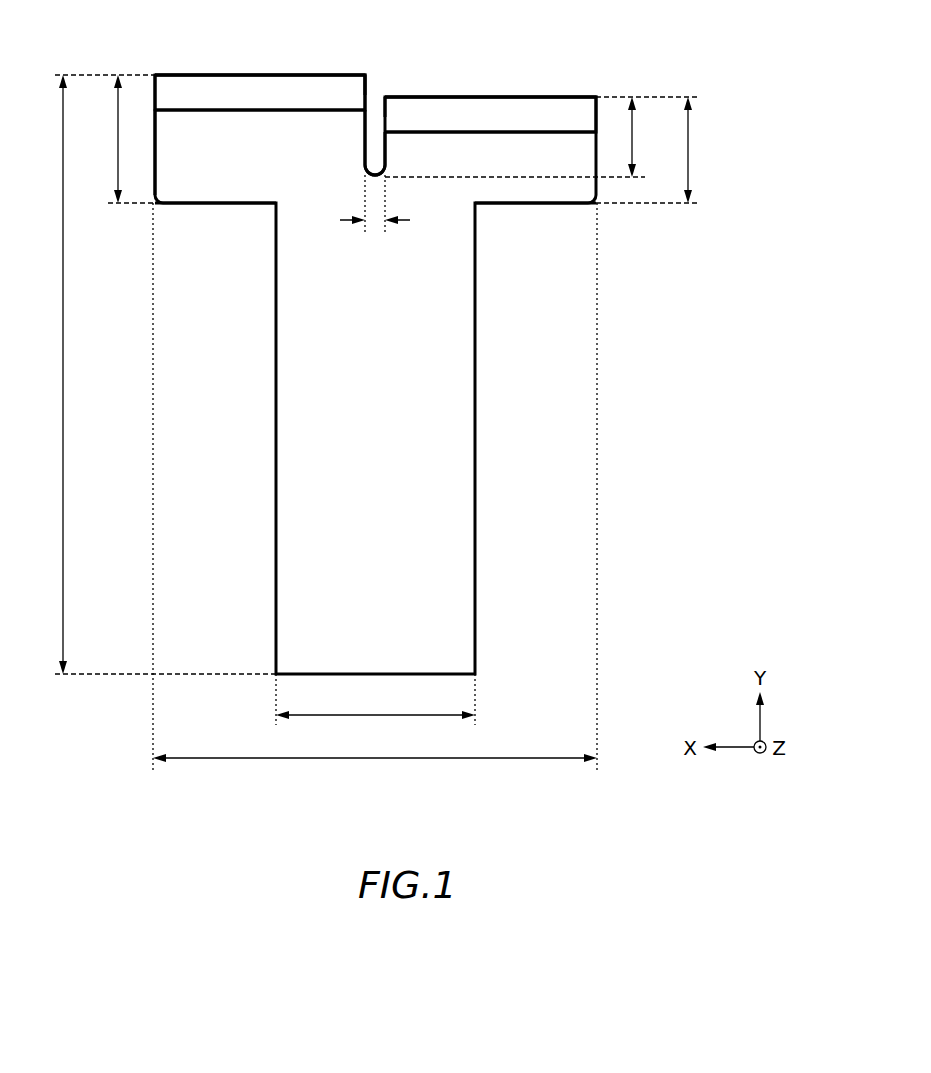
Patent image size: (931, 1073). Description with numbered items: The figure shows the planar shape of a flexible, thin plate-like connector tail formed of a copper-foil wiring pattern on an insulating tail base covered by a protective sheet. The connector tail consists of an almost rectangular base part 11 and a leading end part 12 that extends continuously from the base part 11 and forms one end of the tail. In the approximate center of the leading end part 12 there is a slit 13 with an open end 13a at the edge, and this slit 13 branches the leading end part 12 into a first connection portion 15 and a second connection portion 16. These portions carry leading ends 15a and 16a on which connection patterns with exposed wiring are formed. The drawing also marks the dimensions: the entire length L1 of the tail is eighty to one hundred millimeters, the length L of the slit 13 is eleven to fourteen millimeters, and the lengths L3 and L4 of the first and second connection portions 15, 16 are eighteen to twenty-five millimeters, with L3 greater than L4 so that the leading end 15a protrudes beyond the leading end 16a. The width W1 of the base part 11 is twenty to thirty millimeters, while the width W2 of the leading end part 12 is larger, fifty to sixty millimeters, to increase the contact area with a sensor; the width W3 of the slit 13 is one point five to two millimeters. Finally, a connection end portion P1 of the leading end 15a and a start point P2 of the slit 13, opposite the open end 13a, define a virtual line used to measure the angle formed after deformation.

The base part 11 is at (465, 425).
The leading end part 12 is at (213, 205).
The slit 13 is at (368, 160).
The open end 13a is at (373, 78).
The first connection portion 15 is at (226, 120).
The leading end of first connection portion 15a is at (293, 80).
The second connection portion 16 is at (458, 145).
The leading end of second connection portion 16a is at (524, 105).
The connection end portion P1 is at (155, 110).
The start point of slit P2 is at (374, 177).
The length of slit L is at (542, 137).
The entire length L1 is at (152, 374).
The length of first connection portion L3 is at (119, 139).
The length of second connection portion L4 is at (658, 150).
The width of base part W1 is at (375, 710).
The width of leading end part W2 is at (375, 496).
The width of slit W3 is at (375, 216).